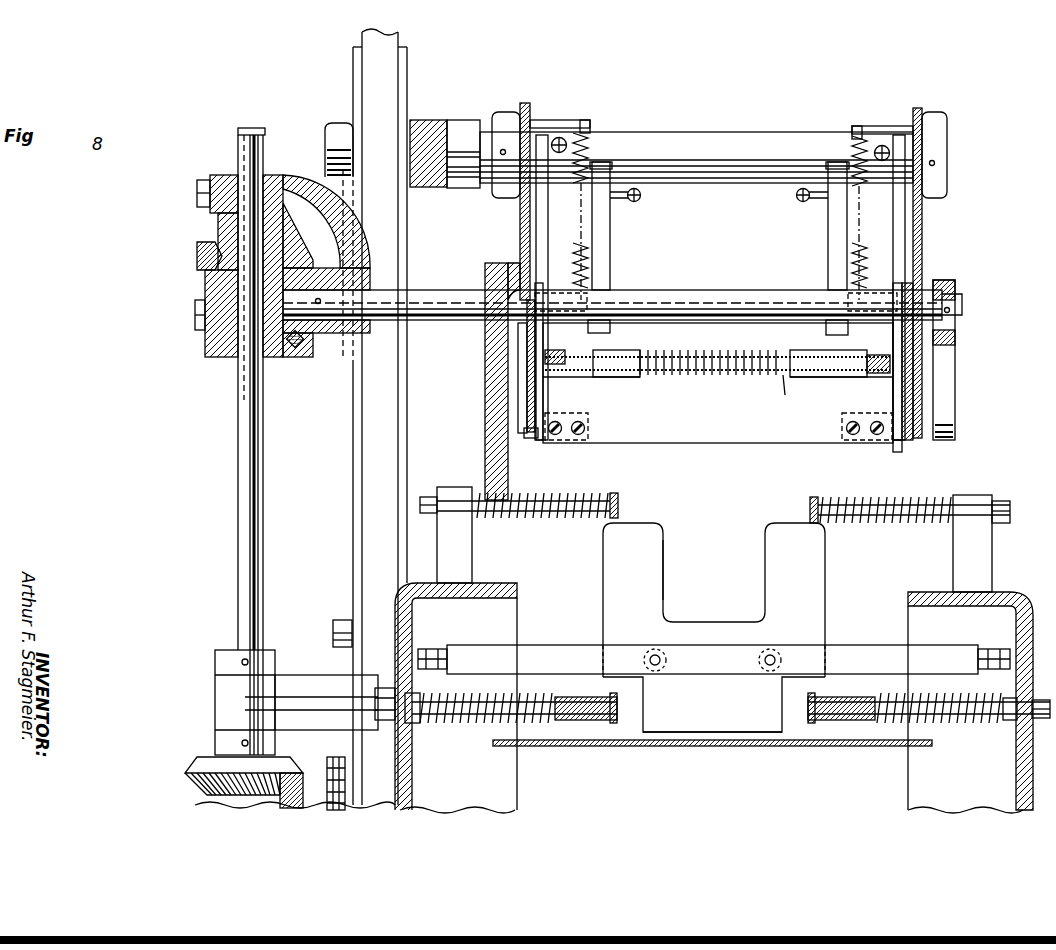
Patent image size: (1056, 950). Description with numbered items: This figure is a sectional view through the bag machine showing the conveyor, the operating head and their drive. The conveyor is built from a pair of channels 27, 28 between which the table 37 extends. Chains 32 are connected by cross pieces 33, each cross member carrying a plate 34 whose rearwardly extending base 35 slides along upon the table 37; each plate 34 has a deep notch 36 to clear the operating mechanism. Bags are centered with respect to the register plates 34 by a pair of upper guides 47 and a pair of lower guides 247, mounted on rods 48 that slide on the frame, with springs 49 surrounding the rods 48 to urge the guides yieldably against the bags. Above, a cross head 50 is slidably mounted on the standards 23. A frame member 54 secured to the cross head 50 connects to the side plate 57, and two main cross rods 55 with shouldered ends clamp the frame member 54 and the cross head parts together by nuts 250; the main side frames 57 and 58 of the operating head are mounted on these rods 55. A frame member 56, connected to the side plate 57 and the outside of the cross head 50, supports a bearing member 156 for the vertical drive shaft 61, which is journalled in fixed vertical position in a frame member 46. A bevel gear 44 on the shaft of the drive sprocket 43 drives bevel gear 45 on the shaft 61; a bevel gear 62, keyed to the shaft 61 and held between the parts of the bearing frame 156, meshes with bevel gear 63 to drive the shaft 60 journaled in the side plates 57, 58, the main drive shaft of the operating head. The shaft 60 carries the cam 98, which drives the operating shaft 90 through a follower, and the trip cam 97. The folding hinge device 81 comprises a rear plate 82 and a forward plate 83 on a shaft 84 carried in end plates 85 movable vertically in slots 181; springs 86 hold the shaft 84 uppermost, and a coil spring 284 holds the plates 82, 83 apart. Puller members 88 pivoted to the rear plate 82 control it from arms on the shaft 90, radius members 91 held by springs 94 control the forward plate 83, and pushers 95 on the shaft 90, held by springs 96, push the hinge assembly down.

The standards 23 is at (377, 56).
The cross head 50 is at (353, 75).
The nuts 250 is at (336, 130).
The frame member 54 is at (425, 130).
The main cross rods 55 is at (706, 140).
The main side frame 57 is at (525, 103).
The main side frame 58 is at (918, 108).
The springs 94 is at (560, 138).
The springs 86 is at (583, 136).
The radius members 91 is at (538, 215).
The pushers 95 is at (610, 236).
The springs 96 is at (639, 200).
The drive shaft 60 is at (432, 290).
The operating shaft 90 is at (782, 323).
The cam 98 is at (487, 452).
The end plates 85 is at (538, 371).
The slots 181 is at (522, 423).
The forward plate 83 is at (710, 445).
The hinge device 81 is at (776, 452).
The puller members 88 is at (538, 440).
The rear plate 82 is at (705, 372).
The coil spring 284 is at (702, 348).
The shaft 84 is at (750, 353).
The trip cam 97 is at (950, 380).
The upper guides 47 is at (620, 507).
The rods 48 is at (590, 504).
The springs 49 is at (548, 502).
The channel 27 is at (495, 585).
The channel 28 is at (938, 592).
The cross pieces 33 is at (567, 645).
The chains 32 is at (433, 649).
The plate 34 is at (610, 578).
The deep notch 36 is at (665, 566).
The lower guides 247 is at (620, 712).
The table 37 is at (694, 748).
The base 35 is at (746, 741).
The vertical drive shaft 61 is at (260, 465).
The frame member 46 is at (230, 688).
The bevel gear 45 is at (200, 765).
The bevel gear 44 is at (285, 802).
The sprocket 43 is at (333, 758).
The bearing member 156 is at (230, 178).
The frame member 56 is at (205, 338).
The bevel gear 62 is at (190, 258).
The bevel gear 63 is at (295, 345).